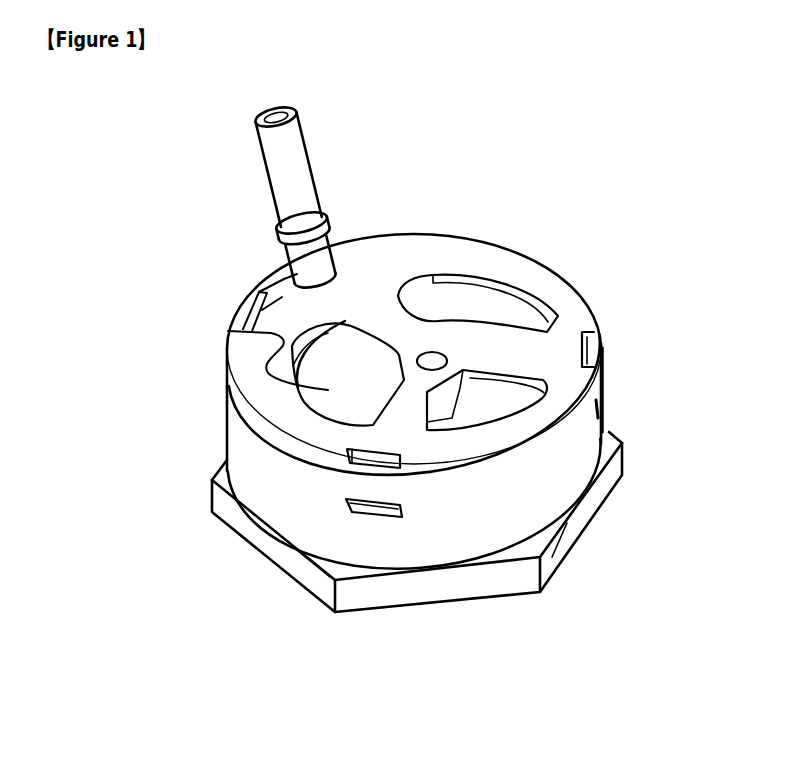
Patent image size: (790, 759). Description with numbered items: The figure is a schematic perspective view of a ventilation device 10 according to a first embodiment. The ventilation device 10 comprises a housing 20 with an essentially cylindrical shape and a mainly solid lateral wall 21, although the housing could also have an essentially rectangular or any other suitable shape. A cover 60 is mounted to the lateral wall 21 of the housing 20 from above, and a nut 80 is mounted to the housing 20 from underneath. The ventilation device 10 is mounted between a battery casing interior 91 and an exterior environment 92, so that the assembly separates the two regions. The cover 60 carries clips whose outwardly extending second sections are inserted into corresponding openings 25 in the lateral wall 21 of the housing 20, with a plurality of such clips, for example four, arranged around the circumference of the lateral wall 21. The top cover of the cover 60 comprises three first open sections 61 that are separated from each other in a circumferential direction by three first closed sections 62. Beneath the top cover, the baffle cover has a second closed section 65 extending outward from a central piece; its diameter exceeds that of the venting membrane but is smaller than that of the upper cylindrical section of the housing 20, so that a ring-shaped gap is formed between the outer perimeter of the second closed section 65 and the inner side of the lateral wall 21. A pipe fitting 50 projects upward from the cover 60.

The ventilation device 10 is at (578, 162).
The housing 20 is at (226, 445).
The lateral wall 21 is at (604, 400).
The openings 25 is at (347, 510).
The pipe 50 is at (314, 188).
The cover 60 is at (270, 292).
The first open sections 61 is at (228, 331).
The first closed sections 62 is at (582, 318).
The second closed section 65 is at (513, 307).
The nut 80 is at (570, 545).
The battery casing interior 91 is at (443, 644).
The exterior environment 92 is at (510, 172).